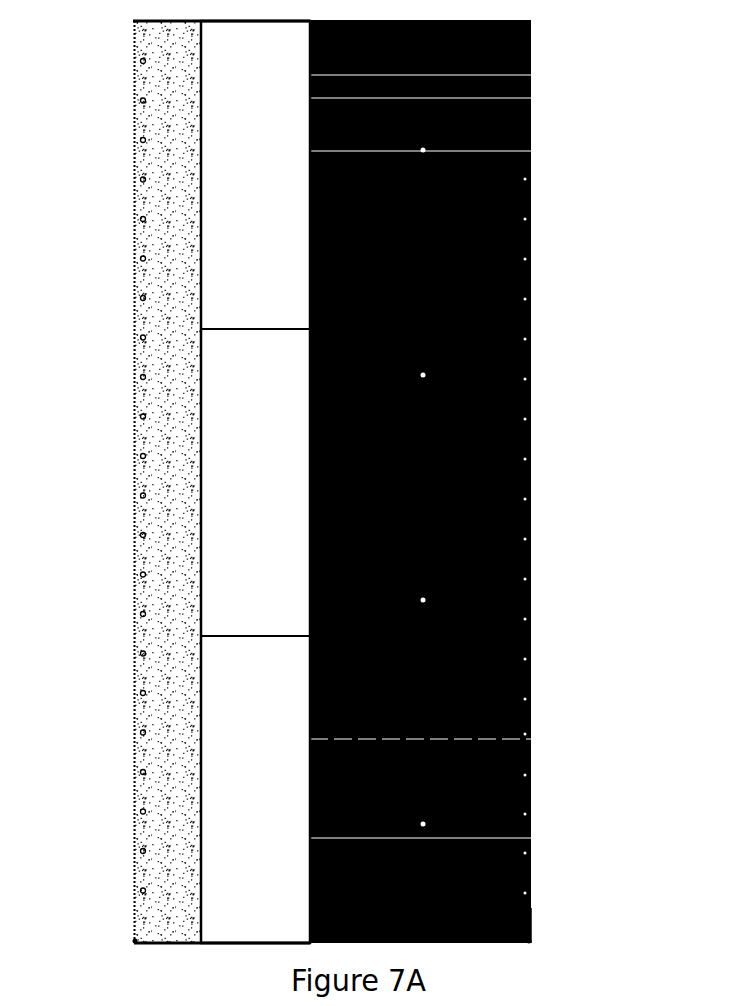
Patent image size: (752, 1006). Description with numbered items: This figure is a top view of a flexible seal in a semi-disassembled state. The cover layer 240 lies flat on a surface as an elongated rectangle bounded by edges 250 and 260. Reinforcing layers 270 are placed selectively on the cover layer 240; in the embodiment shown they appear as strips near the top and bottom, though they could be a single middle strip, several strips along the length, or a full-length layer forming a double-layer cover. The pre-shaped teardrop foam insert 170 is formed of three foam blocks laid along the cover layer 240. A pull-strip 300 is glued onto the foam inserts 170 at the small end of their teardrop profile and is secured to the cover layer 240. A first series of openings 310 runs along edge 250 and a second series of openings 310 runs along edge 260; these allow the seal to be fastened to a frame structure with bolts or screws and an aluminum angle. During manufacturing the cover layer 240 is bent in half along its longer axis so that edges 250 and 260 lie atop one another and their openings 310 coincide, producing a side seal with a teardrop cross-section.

The pre-shaped teardrop foam insert 170 is at (241, 163).
The cover layer 240 is at (523, 398).
The edge 250 is at (522, 935).
The edge 260 is at (127, 933).
The reinforcing layer 270 is at (523, 70).
The pull-strip 300 is at (173, 900).
The openings 310 is at (132, 375).